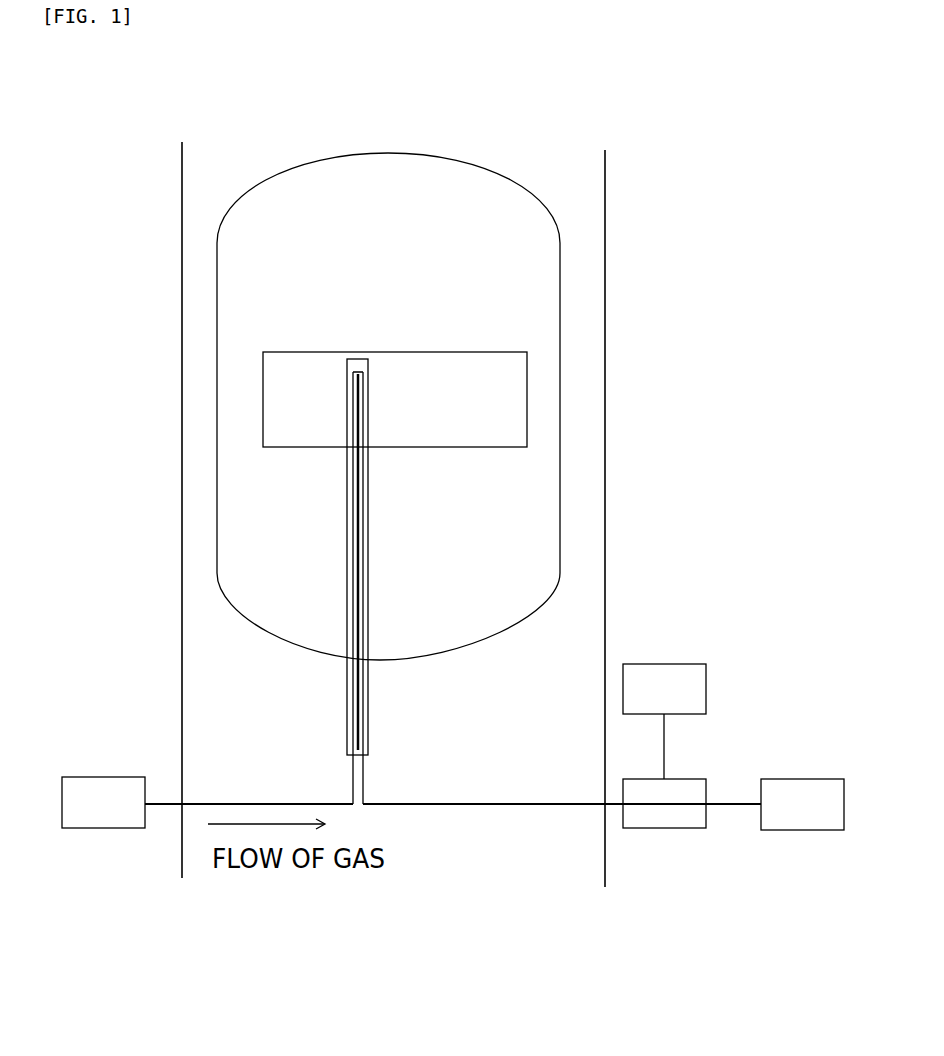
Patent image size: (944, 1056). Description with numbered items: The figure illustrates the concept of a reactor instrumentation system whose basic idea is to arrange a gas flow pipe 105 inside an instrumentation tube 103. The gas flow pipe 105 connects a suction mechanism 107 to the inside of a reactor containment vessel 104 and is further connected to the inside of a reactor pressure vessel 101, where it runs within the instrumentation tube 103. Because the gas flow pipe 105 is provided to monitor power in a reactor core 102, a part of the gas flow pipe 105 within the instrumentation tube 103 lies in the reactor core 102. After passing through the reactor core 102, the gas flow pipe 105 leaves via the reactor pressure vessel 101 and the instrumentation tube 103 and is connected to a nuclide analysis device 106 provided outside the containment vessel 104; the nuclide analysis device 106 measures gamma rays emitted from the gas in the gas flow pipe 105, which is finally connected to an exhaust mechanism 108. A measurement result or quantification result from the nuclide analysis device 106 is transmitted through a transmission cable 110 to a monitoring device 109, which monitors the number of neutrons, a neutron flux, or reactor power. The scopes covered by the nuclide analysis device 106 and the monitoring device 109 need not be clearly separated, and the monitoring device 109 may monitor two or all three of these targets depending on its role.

The reactor pressure vessel 101 is at (493, 178).
The reactor core 102 is at (263, 402).
The instrumentation tube 103 is at (350, 359).
The reactor containment vessel 104 is at (182, 248).
The gas flow pipe 105 is at (482, 804).
The nuclide analysis device 106 is at (653, 830).
The suction mechanism 107 is at (83, 777).
The exhaust mechanism 108 is at (792, 779).
The monitoring device 109 is at (668, 663).
The transmission cable 110 is at (667, 762).